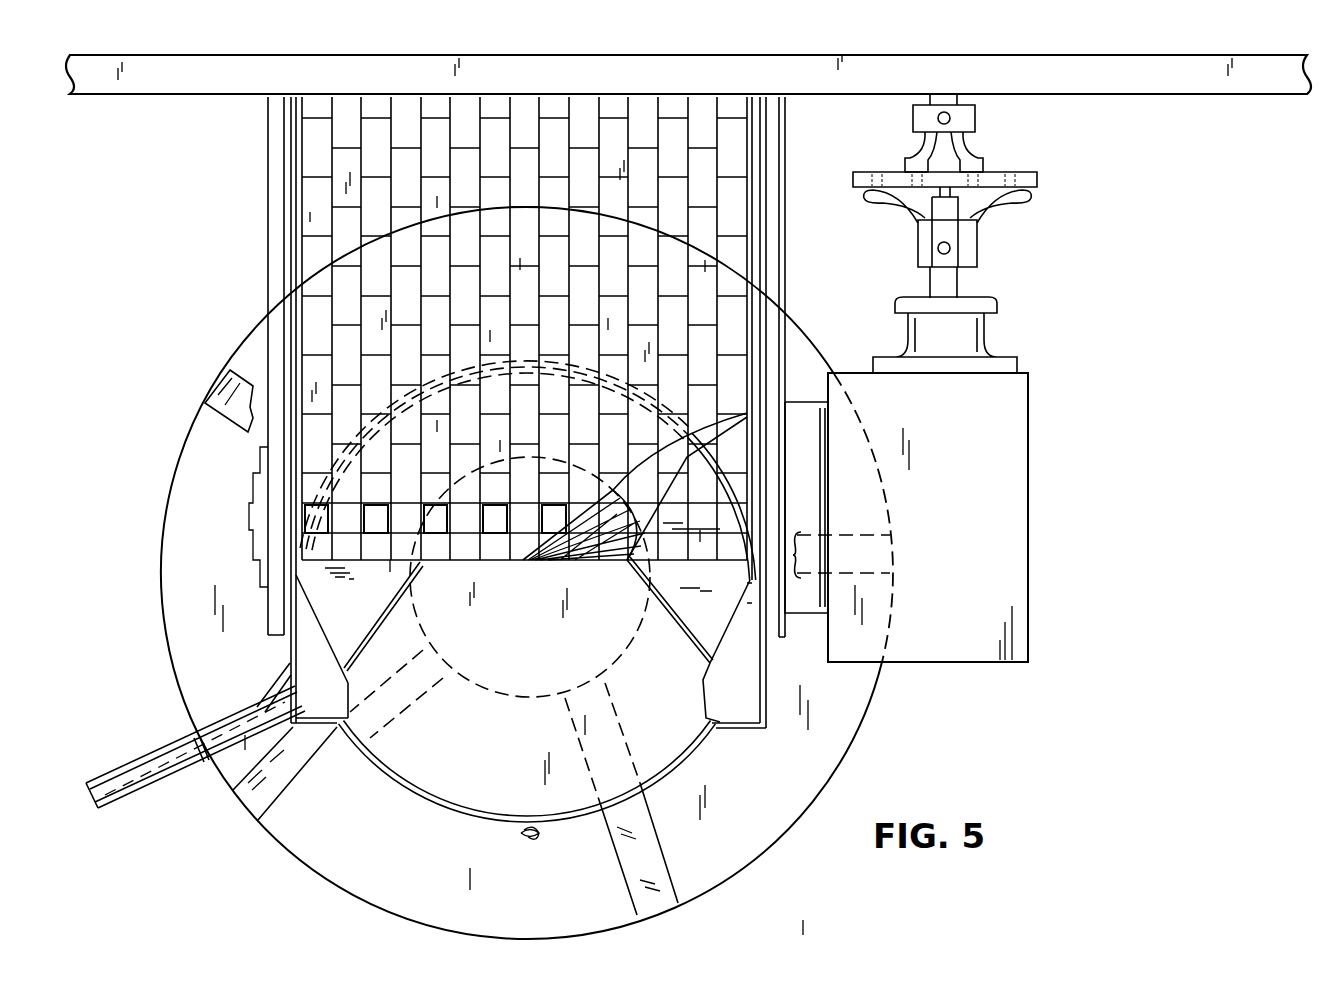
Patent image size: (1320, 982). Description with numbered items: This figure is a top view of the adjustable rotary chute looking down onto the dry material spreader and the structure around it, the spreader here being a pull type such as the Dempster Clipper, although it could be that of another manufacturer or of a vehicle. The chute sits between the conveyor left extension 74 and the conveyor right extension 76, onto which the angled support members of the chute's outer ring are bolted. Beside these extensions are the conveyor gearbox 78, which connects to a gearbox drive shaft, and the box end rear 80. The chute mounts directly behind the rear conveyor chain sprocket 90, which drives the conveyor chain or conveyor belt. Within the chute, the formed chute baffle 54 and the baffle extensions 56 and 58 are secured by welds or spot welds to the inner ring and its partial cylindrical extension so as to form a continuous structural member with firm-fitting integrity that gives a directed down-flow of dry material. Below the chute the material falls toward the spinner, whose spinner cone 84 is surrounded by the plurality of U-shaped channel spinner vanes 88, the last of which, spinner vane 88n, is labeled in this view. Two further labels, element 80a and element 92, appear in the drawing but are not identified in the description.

The formed chute baffle 54 is at (539, 652).
The baffle extension 56 is at (359, 616).
The baffle extension 58 is at (706, 570).
The conveyor left extension 74 is at (268, 281).
The conveyor right extension 76 is at (785, 306).
The conveyor gearbox 78 is at (1028, 545).
The box end rear 80 is at (812, 418).
The damper stop block 80a is at (222, 392).
The spinner cone 84 is at (623, 657).
The spinner vane 88 is at (863, 725).
The spinner vane 88n is at (877, 557).
The rear conveyor chain sprocket 90 is at (307, 508).
The refractory brick wall 92 is at (703, 282).